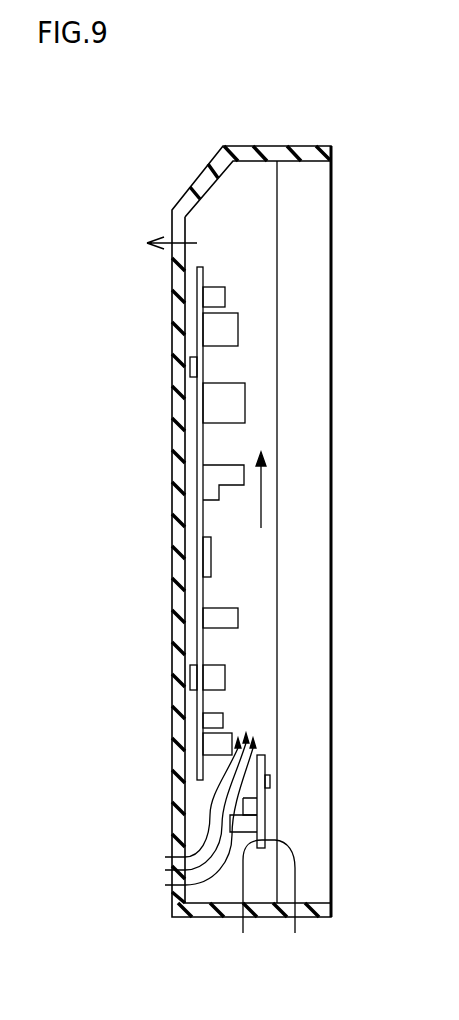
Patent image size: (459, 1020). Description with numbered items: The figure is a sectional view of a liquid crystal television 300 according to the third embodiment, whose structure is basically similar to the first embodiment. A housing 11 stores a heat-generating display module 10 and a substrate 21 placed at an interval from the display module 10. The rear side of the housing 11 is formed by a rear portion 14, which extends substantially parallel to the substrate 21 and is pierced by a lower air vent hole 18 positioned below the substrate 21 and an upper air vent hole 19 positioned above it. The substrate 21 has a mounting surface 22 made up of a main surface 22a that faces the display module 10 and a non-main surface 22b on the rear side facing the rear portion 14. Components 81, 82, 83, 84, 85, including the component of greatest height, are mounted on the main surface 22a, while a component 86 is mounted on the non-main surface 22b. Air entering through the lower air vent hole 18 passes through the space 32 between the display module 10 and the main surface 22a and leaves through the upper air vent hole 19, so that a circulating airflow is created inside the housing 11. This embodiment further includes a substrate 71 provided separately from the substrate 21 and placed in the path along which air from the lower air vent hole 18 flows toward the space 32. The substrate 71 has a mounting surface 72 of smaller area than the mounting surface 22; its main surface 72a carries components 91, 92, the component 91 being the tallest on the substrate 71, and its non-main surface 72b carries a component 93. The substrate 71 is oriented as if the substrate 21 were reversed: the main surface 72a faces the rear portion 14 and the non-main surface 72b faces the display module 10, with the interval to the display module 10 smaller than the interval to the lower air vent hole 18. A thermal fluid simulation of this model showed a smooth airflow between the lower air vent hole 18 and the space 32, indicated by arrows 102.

The liquid crystal television 300 is at (144, 112).
The display module 10 is at (315, 328).
The housing 11 is at (276, 153).
The rear portion 14 is at (185, 440).
The upper air vent hole 19 is at (178, 228).
The arrows 102 is at (200, 906).
The substrate 21 is at (200, 522).
The space 32 is at (255, 593).
The component 81 is at (217, 300).
The component 82 is at (230, 405).
The component 83 is at (210, 557).
The component 84 is at (217, 679).
The component 85 is at (220, 744).
The component 86 is at (190, 366).
The mounting surface 22 is at (83, 695).
The main surface 22a is at (203, 733).
The non-main surface 22b is at (214, 714).
The lower air vent hole 18 is at (165, 857).
The substrate 71 is at (260, 817).
The component 93 is at (270, 783).
The component 92 is at (243, 803).
The component 91 is at (232, 823).
The mounting surface 72 is at (310, 958).
The main surface 72a is at (249, 898).
The non-main surface 72b is at (288, 898).